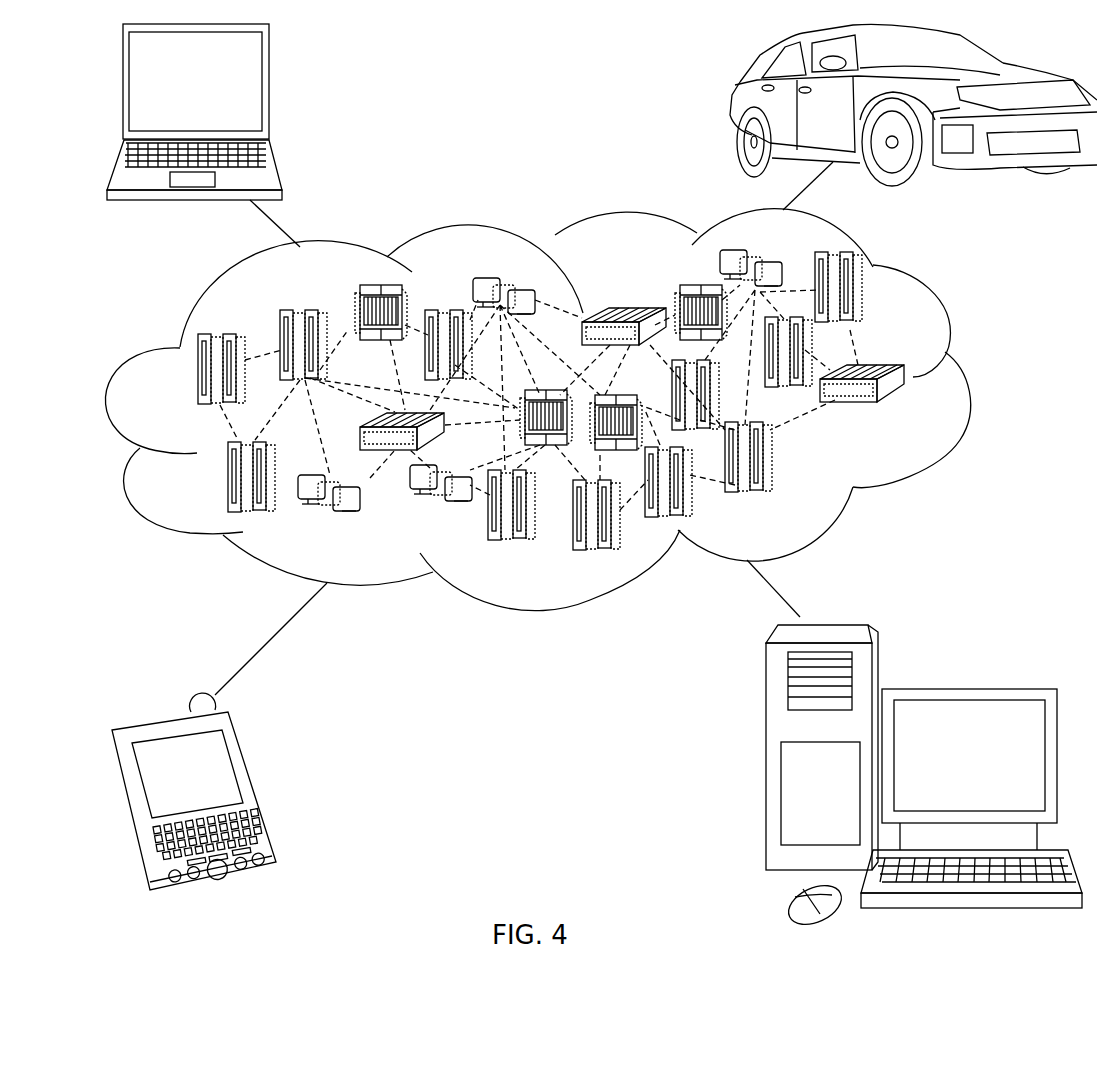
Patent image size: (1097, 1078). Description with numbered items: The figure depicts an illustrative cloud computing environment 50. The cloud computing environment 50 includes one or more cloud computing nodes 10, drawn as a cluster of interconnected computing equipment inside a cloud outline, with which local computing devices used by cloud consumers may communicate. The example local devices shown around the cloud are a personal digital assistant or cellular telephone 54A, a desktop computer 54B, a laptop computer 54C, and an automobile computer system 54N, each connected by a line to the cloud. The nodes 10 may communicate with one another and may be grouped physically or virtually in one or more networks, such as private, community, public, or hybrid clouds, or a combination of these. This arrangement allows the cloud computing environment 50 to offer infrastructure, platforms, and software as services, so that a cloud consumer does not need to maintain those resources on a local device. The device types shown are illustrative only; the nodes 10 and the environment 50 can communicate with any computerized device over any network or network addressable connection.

The cloud computing node 10 is at (907, 412).
The cloud computing environment 50 is at (967, 382).
The personal digital assistant or cellular telephone 54A is at (258, 790).
The desktop computer 54B is at (965, 688).
The laptop computer 54C is at (268, 93).
The automobile computer system 54N is at (733, 108).